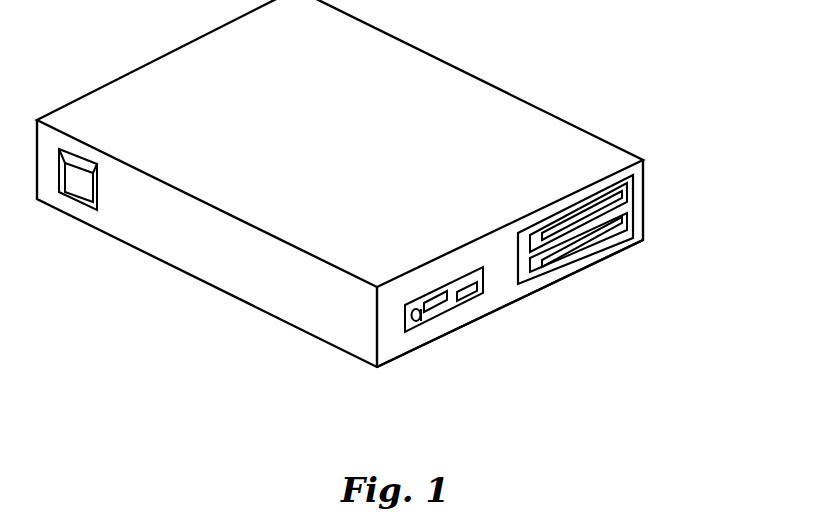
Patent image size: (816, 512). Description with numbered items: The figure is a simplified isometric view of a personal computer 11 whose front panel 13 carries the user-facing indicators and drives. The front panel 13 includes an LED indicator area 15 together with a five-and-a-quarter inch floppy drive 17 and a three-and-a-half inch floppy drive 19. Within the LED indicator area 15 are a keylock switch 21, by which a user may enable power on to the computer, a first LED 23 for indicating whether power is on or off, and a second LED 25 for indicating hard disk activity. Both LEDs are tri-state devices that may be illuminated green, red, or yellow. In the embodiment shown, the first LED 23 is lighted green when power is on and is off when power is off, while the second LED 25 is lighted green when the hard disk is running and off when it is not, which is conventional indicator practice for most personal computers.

The personal computer 11 is at (553, 88).
The front panel 13 is at (396, 345).
The LED indicator area 15 is at (490, 278).
The 5¼ inch floppy drive 17 is at (620, 198).
The 3½ inch floppy drive 19 is at (622, 222).
The keylock switch 21 is at (420, 313).
The first LED 23 is at (442, 307).
The second LED 25 is at (480, 294).